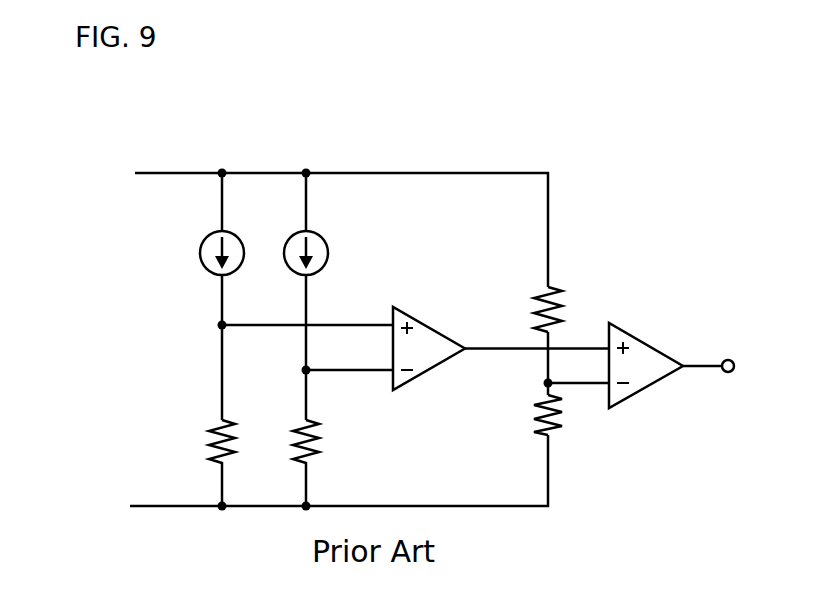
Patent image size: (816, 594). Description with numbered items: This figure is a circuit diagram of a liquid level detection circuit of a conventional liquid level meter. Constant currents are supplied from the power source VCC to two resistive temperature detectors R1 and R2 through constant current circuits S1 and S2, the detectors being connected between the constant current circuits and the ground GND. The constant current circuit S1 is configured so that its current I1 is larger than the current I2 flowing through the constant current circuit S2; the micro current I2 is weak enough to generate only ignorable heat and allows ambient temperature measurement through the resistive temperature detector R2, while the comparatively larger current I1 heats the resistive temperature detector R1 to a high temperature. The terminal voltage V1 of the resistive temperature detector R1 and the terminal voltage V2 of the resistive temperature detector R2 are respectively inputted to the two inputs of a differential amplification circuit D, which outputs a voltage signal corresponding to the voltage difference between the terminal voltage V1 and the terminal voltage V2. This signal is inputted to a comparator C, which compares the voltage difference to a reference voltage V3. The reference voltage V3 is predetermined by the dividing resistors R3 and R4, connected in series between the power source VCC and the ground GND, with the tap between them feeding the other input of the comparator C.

The power source VCC is at (305, 224).
The ground rail GND is at (305, 477).
The constant current circuit S1 is at (200, 249).
The constant current circuit S2 is at (323, 238).
The first current I1 is at (207, 202).
The second current I2 is at (319, 202).
The terminal voltage V1 is at (286, 326).
The terminal voltage V2 is at (328, 371).
The reference voltage V3 is at (549, 378).
The resistive temperature detector R1 is at (217, 428).
The resistive temperature detector R2 is at (320, 445).
The dividing resistor R3 is at (556, 293).
The dividing resistor R4 is at (560, 428).
The differential amplification circuit D is at (433, 330).
The comparator C is at (652, 345).